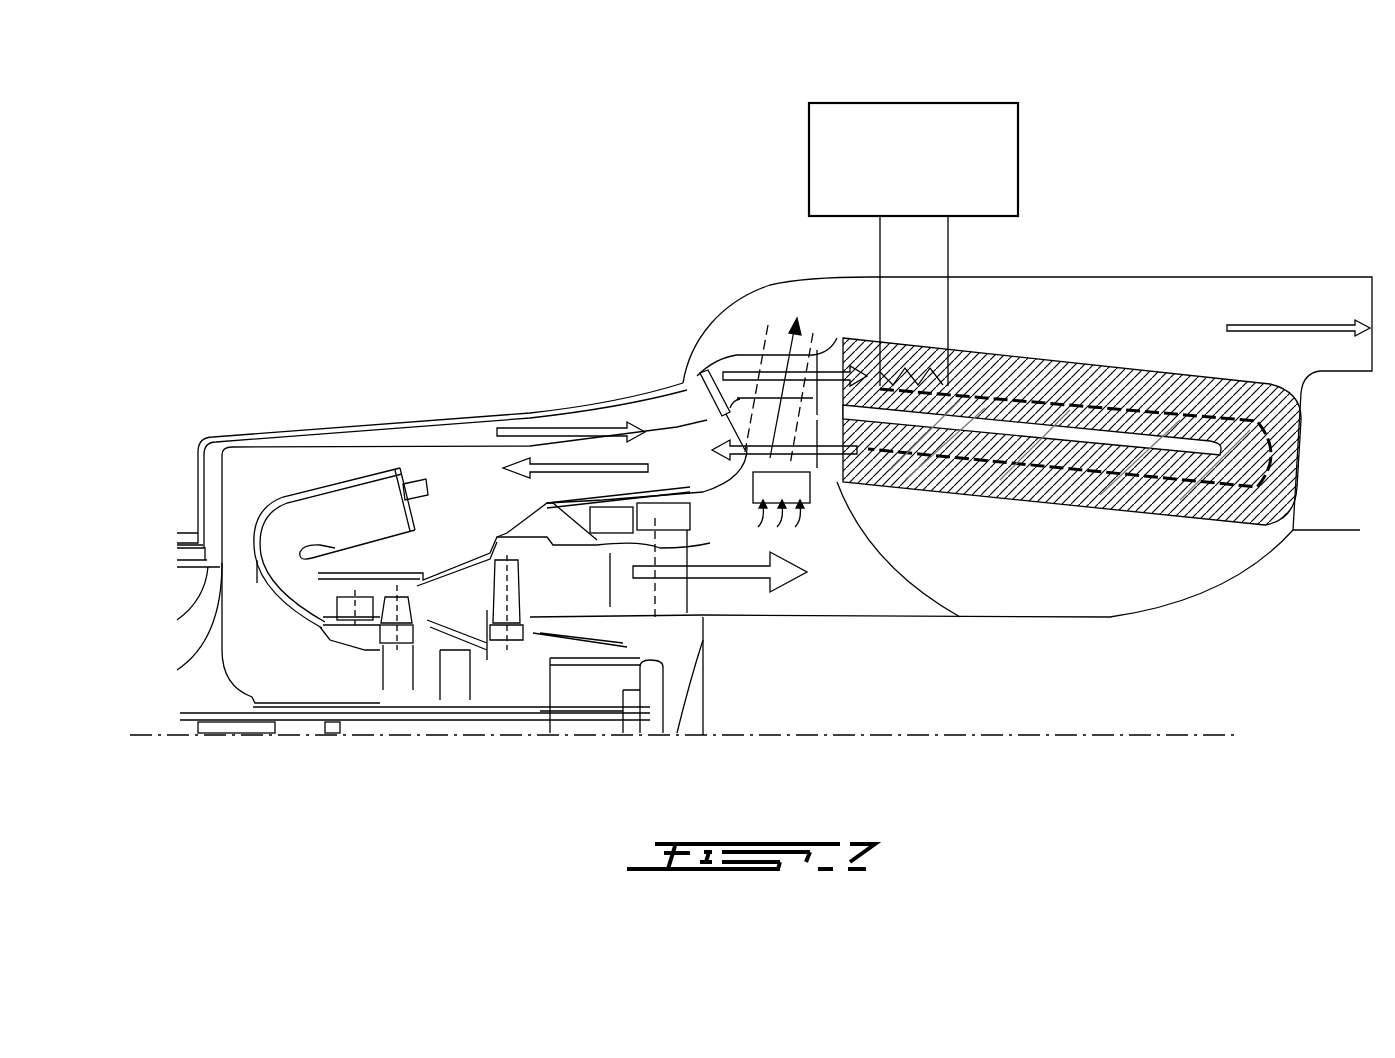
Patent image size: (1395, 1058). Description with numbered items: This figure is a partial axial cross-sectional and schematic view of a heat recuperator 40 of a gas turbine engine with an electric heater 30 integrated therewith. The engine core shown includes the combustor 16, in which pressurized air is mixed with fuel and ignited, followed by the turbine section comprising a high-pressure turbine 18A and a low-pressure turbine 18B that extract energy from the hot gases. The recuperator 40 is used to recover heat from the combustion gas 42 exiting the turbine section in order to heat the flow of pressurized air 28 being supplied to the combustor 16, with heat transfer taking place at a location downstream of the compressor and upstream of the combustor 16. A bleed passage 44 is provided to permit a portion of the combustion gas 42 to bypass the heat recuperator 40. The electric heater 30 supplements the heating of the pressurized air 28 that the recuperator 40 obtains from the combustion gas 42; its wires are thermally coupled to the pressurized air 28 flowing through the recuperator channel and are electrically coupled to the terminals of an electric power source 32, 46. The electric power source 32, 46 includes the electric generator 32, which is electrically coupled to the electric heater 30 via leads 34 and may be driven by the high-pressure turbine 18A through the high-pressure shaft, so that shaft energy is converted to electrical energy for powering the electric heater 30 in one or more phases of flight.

The combustor 16 is at (380, 507).
The high-pressure turbine 18A is at (400, 657).
The low-pressure turbine 18B is at (510, 640).
The pressurized air 28 is at (468, 430).
The electric heater 30 is at (940, 370).
The electric generator 32 is at (845, 159).
The electric power source 46 is at (809, 158).
The leads 34 is at (880, 255).
The heat recuperator 40 is at (1086, 338).
The combustion gas 42 is at (822, 569).
The bleed passage 44 is at (790, 486).